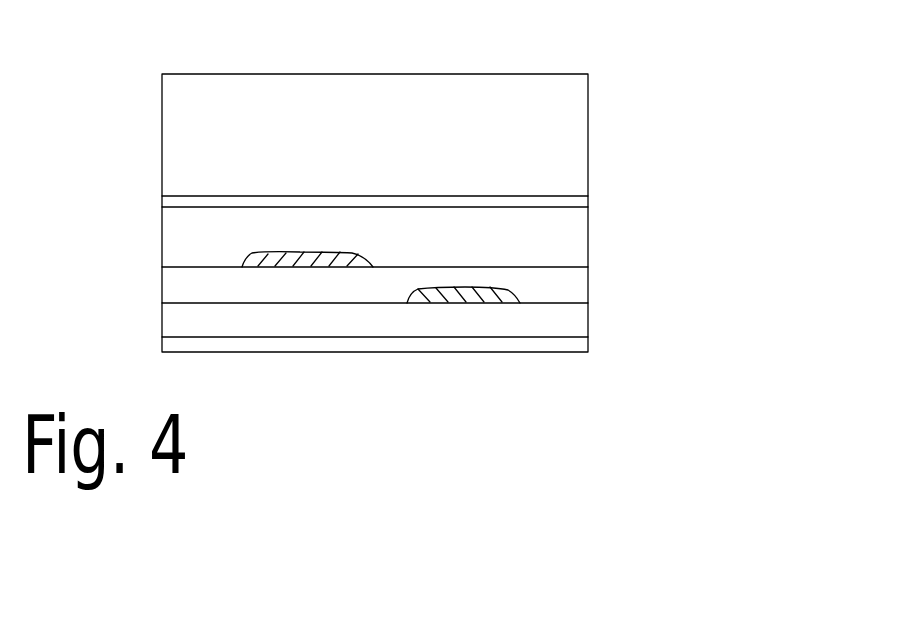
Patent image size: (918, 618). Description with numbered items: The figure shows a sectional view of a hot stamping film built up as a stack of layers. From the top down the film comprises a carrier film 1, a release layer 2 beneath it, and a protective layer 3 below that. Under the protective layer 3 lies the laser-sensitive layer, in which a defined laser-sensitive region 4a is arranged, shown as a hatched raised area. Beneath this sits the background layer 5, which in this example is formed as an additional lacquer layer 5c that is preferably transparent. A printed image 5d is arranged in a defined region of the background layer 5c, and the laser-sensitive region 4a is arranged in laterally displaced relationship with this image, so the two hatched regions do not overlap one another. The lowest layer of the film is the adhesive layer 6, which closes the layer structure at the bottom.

The carrier film 1 is at (537, 150).
The release layer 2 is at (537, 203).
The protective layer 3 is at (537, 227).
The laser-sensitive region 4a is at (340, 260).
The lacquer layer 5c is at (537, 278).
The printed image 5d is at (513, 303).
The background layer 5 is at (533, 322).
The adhesive layer 6 is at (538, 346).